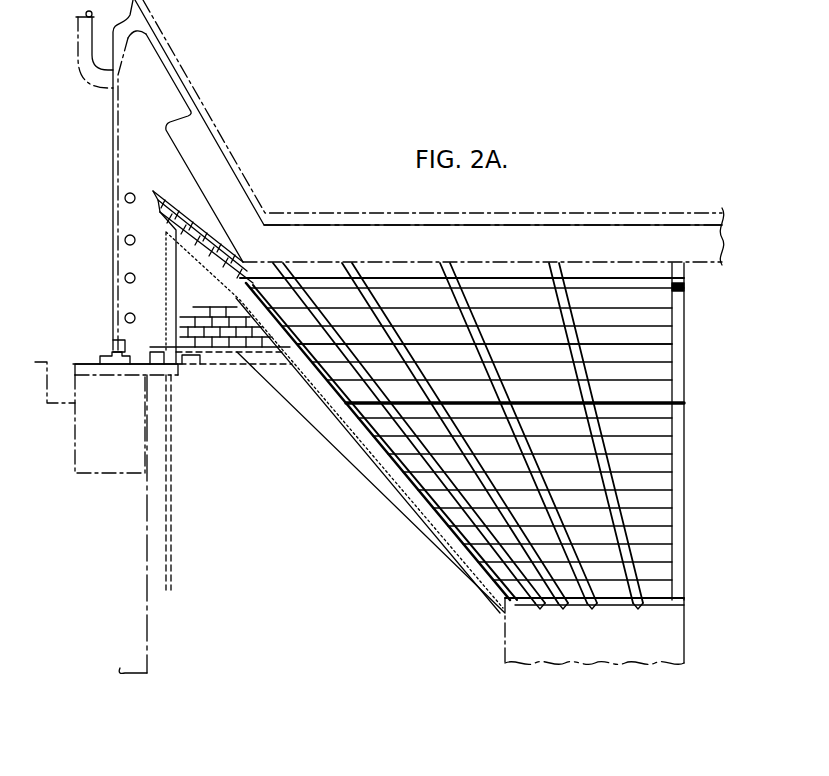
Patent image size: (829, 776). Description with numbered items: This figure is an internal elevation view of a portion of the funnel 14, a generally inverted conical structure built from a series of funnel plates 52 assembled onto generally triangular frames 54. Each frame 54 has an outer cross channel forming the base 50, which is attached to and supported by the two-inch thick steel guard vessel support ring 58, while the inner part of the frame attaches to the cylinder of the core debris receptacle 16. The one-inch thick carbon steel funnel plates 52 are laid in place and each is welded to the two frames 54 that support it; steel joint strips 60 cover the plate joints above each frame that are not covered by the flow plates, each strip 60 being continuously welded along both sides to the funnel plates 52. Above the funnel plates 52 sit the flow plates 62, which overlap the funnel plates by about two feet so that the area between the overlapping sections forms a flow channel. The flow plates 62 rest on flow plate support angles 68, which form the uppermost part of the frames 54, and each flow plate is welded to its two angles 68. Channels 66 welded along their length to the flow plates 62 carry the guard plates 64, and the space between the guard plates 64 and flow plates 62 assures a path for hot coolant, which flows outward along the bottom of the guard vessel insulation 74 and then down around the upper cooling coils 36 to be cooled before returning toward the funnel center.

The funnel 14 is at (256, 468).
The core debris receptacle 16 is at (505, 633).
The upper cooling coils 36 is at (125, 318).
The base 50 is at (197, 364).
The funnel plates 52 is at (640, 484).
The triangular frames 54 is at (176, 291).
The guard vessel support ring 58 is at (87, 365).
The joint strips 60 is at (680, 377).
The flow plates 62 is at (647, 342).
The guard plates 64 is at (173, 192).
The channels 66 is at (381, 287).
The flow plate support angles 68 is at (333, 403).
The guard vessel insulation 74 is at (208, 158).